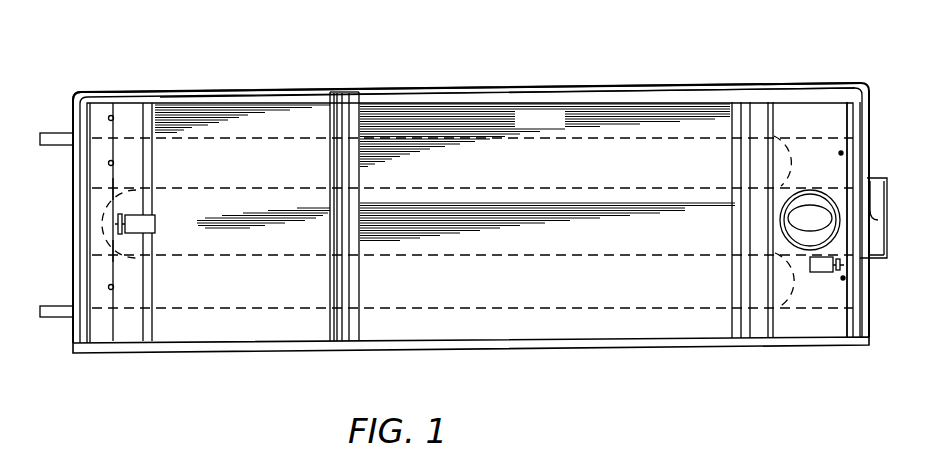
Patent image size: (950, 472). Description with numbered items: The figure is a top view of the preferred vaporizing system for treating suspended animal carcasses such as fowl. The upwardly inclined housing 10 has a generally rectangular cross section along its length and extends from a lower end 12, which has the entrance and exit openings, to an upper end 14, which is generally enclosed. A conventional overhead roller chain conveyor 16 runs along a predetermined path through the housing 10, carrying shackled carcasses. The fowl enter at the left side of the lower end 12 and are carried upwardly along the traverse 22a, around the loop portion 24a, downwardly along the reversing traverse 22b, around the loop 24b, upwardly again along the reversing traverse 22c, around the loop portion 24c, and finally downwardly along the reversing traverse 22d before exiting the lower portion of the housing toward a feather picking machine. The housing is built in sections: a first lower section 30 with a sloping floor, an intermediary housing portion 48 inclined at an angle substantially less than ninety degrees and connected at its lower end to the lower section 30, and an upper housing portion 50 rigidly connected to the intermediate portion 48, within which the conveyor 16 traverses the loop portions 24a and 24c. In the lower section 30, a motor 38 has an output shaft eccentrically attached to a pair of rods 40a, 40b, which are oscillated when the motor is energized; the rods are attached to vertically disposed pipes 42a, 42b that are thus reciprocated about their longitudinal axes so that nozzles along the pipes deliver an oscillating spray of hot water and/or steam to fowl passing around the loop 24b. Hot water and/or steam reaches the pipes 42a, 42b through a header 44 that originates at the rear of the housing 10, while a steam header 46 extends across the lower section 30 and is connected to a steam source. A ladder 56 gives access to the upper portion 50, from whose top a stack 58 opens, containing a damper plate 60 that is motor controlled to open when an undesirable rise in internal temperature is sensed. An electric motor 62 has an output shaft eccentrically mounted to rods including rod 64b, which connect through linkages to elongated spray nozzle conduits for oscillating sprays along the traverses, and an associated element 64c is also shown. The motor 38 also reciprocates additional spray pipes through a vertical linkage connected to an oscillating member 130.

The housing 10 is at (642, 80).
The lower end 12 is at (70, 103).
The upper end 14 is at (864, 299).
The overhead roller chain conveyor 16 is at (60, 132).
The traverse 22a is at (568, 135).
The reversing traverse 22b is at (569, 189).
The reversing traverse 22c is at (564, 257).
The reversing traverse 22d is at (560, 310).
The loop portion 24a is at (797, 142).
The loop 24b is at (104, 242).
The loop portion 24c is at (797, 301).
The lower housing section 30 is at (164, 356).
The motor 38 is at (156, 223).
The rod 40a is at (114, 250).
The rod 40b is at (114, 188).
The vertically disposed pipe 42a is at (108, 287).
The vertically disposed pipe 42b is at (108, 164).
The header 44 is at (267, 91).
The steam header 46 is at (331, 349).
The intermediary housing portion 48 is at (609, 350).
The upper housing portion 50 is at (814, 352).
The ladder 56 is at (879, 177).
The stack 58 is at (810, 189).
The damper plate 60 is at (790, 215).
The electric motor 62 is at (834, 272).
The rod 64b is at (843, 153).
The fastener 64c is at (845, 279).
The oscillating member 130 is at (111, 115).